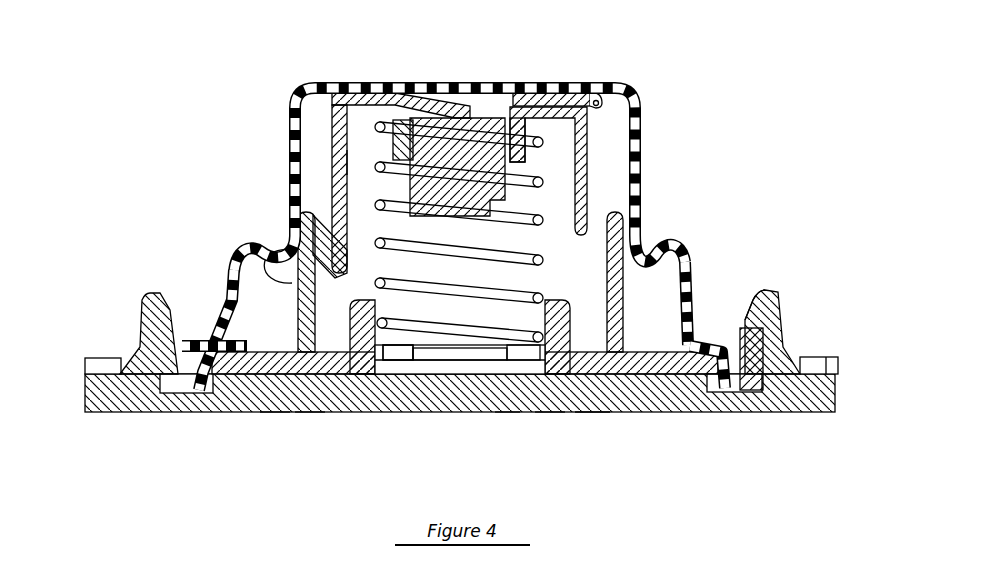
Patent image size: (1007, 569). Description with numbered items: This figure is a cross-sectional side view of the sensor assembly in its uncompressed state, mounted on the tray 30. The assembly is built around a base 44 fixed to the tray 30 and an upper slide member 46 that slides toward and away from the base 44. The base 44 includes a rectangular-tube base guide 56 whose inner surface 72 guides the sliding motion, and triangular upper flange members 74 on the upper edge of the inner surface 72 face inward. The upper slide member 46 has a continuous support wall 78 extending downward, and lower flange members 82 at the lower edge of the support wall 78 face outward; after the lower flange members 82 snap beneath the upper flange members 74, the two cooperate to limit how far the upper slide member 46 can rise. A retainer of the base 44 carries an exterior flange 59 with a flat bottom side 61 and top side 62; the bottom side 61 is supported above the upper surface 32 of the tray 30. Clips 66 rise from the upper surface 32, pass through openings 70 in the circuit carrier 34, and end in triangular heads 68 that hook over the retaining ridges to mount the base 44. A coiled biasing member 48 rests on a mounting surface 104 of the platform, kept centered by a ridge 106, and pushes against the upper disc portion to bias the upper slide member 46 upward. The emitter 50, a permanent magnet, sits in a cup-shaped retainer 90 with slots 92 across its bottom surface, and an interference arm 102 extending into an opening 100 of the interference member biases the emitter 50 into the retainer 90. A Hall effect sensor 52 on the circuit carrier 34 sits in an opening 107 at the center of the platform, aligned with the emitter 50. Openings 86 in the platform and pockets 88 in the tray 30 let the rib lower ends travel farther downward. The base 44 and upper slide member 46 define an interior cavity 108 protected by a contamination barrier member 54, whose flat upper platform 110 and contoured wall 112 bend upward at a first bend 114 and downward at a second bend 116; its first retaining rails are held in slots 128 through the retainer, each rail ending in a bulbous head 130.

The tray 30 is at (820, 412).
The upper surface 32 is at (826, 360).
The circuit carrier 34 is at (800, 358).
The base 44 is at (285, 333).
The upper slide member 46 is at (318, 124).
The biasing member 48 is at (532, 140).
The emitter 50 is at (487, 145).
The sensor 52 is at (430, 412).
The contamination barrier member 54 is at (320, 78).
The base guide 56 is at (640, 242).
The exterior flange 59 is at (675, 300).
The bottom side 61 is at (183, 412).
The top side 62 is at (690, 258).
The clip 66 is at (785, 312).
The triangular head 68 is at (745, 298).
The opening 70 is at (130, 362).
The inner surface 72 is at (178, 320).
The upper flange member 74 is at (305, 182).
The support wall 78 is at (340, 160).
The lower flange member 82 is at (290, 248).
The opening 86 is at (310, 412).
The pocket 88 is at (273, 412).
The retainer 90 is at (560, 95).
The slot 92 is at (520, 160).
The opening 100 is at (503, 107).
The interference arm 102 is at (388, 93).
The mounting surface 104 is at (478, 412).
The ridge 106 is at (592, 412).
The opening 107 is at (550, 412).
The interior cavity 108 is at (345, 360).
The upper platform 110 is at (335, 84).
The wall 112 is at (288, 138).
The first bend 114 is at (238, 270).
The second bend 116 is at (245, 240).
The slot 128 is at (690, 412).
The bulbous head 130 is at (720, 412).